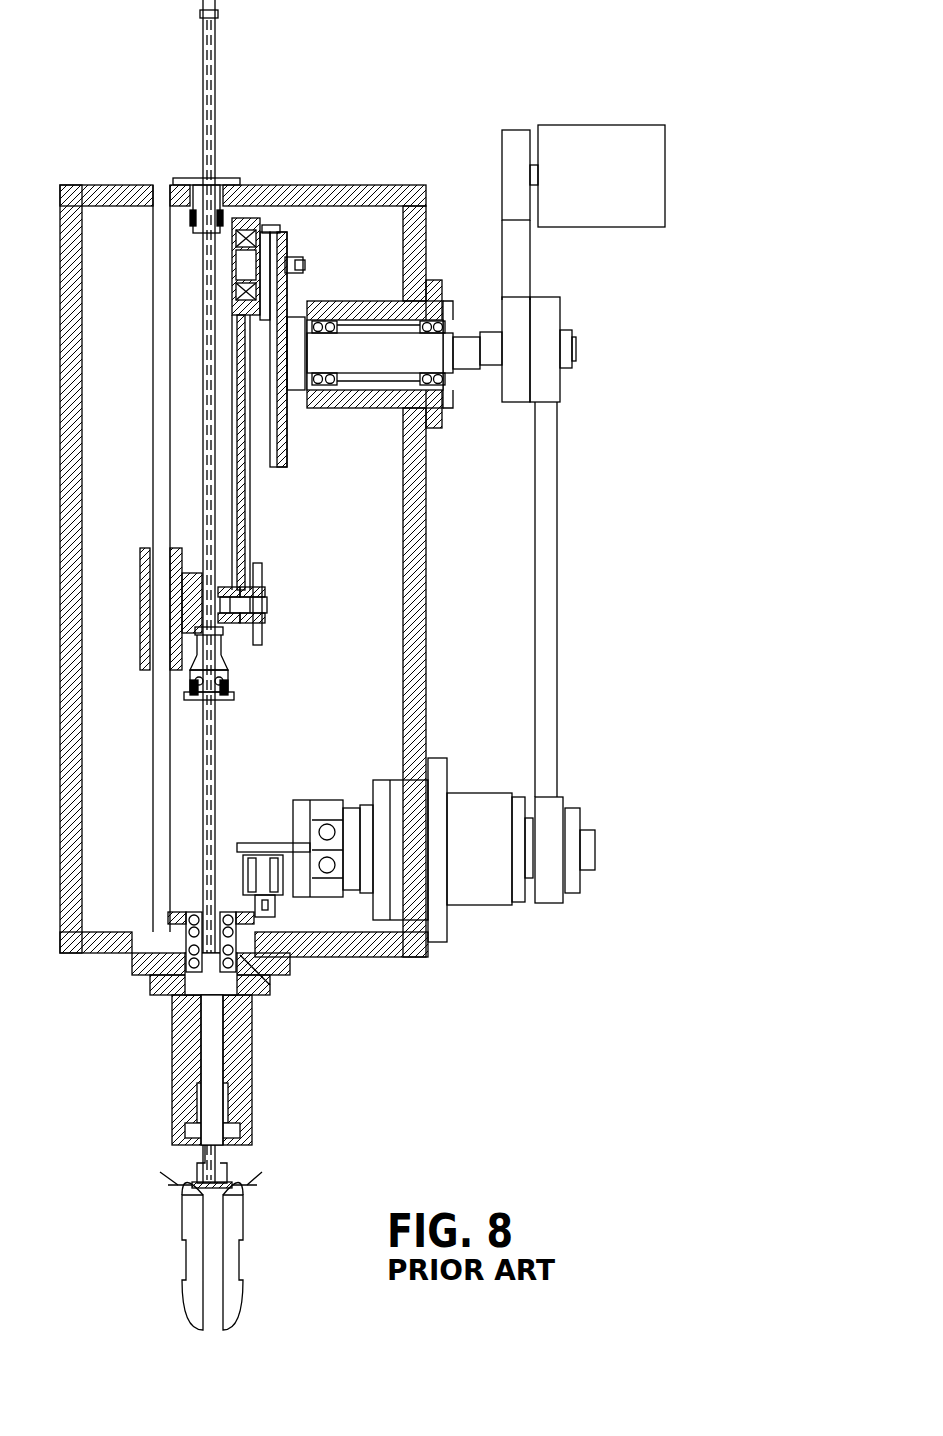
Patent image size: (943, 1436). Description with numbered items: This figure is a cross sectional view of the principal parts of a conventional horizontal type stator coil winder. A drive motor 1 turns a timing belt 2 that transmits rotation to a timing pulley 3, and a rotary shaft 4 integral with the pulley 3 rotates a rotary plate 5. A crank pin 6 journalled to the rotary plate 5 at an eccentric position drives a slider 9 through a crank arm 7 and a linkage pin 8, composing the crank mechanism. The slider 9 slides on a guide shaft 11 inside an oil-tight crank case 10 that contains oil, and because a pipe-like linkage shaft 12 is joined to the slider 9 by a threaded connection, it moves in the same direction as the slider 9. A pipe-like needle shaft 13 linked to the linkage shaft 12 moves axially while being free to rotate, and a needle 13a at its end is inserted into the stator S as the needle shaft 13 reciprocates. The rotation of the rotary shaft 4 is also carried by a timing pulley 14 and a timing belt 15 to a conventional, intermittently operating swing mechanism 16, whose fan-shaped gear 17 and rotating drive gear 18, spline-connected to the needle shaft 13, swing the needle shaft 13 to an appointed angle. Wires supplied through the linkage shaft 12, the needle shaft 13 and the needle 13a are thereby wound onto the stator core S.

The drive motor 1 is at (650, 152).
The timing belt 2 is at (518, 270).
The timing pulley 3 is at (513, 393).
The rotary shaft 4 is at (391, 345).
The rotary plate 5 is at (288, 456).
The crank pin 6 is at (290, 262).
The crank arm 7 is at (251, 527).
The linkage pin 8 is at (262, 606).
The slider 9 is at (140, 632).
The crank case 10 is at (106, 190).
The guide shaft 11 is at (157, 729).
The linkage shaft 12 is at (213, 128).
The needle shaft 13 is at (212, 1060).
The needle 13a is at (231, 1188).
The timing pulley 14 is at (545, 380).
The timing belt 15 is at (559, 520).
The swing mechanism 16 is at (408, 800).
The fan-shaped gear 17 is at (285, 986).
The rotating drive gear 18 is at (198, 977).
The stator S is at (185, 1308).